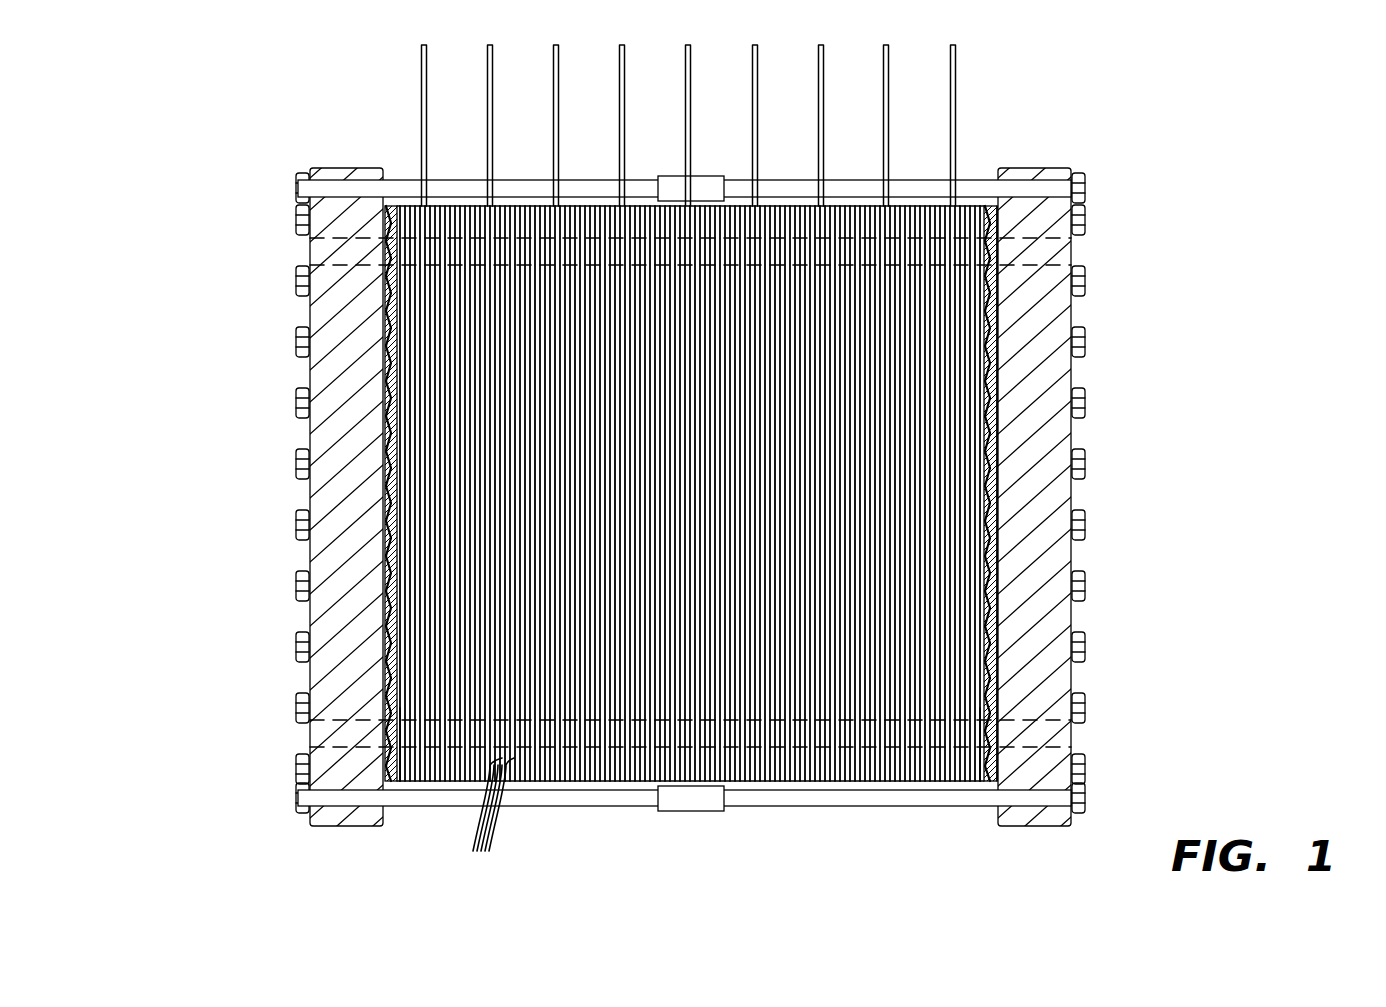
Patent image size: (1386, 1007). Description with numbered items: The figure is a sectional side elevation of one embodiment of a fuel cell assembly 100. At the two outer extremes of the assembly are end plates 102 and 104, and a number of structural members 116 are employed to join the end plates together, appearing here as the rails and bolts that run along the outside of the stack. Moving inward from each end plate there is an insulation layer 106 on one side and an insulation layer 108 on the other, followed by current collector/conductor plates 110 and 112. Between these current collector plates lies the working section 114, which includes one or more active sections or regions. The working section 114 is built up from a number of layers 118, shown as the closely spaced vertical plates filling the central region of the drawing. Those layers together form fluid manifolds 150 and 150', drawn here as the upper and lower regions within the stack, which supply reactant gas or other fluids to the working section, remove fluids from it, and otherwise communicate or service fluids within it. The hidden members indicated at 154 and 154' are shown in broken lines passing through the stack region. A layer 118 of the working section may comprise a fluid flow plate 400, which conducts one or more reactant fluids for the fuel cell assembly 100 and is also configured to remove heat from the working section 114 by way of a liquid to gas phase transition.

The fuel cell assembly 100 is at (229, 118).
The end plate 102 is at (312, 168).
The end plate 104 is at (1053, 162).
The insulation layer 106 is at (378, 200).
The insulation layer 108 is at (988, 200).
The current collector/conductor plate 110 is at (392, 199).
The current collector/conductor plate 112 is at (982, 200).
The working section 114 is at (836, 780).
The structural member 116 is at (761, 800).
The layer 118 is at (486, 821).
The fluid manifold 150 is at (690, 438).
The fluid manifold 150' is at (690, 796).
The upper tie rod 154 is at (631, 243).
The lower tie rod 154' is at (628, 723).
The fluid flow plate 400 is at (814, 160).